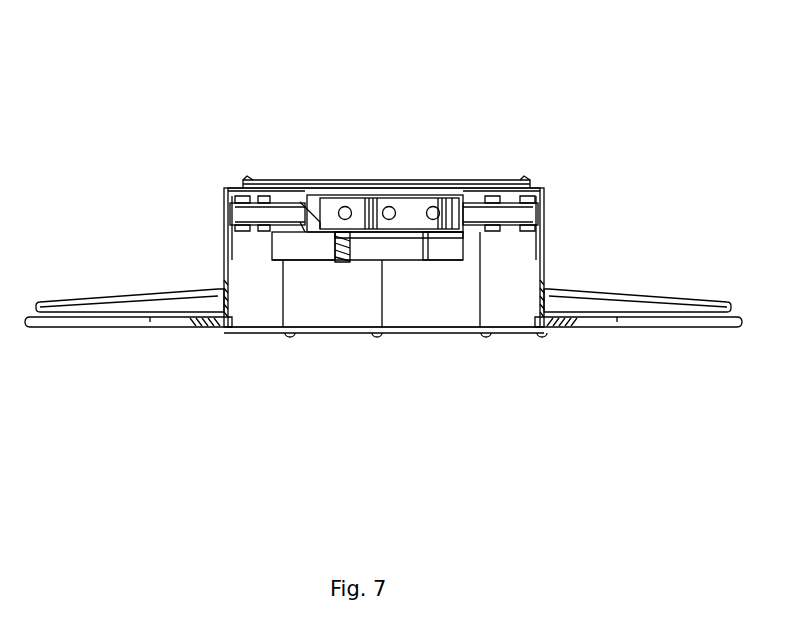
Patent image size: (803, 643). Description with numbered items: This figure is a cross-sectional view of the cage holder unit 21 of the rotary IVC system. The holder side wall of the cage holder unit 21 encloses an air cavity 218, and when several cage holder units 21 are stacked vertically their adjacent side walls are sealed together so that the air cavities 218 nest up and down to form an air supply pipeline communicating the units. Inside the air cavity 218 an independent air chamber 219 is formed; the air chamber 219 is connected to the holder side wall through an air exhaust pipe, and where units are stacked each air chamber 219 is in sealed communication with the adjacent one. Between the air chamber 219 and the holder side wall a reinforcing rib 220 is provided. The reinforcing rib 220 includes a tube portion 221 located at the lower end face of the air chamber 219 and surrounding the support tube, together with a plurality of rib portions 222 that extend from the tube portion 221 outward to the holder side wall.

The cage holder unit 21 is at (228, 41).
The air cavity 218 is at (493, 312).
The air chamber 219 is at (403, 207).
The reinforcing rib 220 is at (370, 408).
The tube portion 221 is at (339, 235).
The rib portion 222 is at (296, 245).